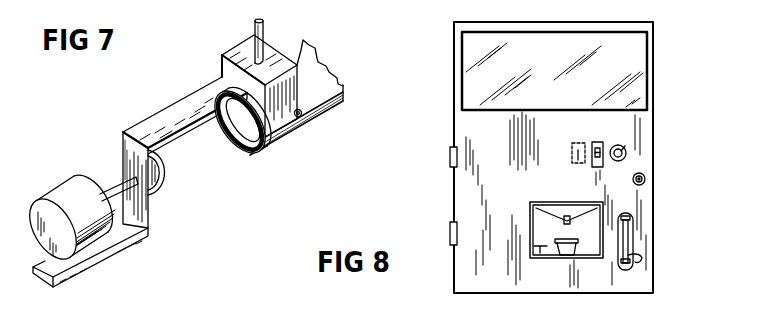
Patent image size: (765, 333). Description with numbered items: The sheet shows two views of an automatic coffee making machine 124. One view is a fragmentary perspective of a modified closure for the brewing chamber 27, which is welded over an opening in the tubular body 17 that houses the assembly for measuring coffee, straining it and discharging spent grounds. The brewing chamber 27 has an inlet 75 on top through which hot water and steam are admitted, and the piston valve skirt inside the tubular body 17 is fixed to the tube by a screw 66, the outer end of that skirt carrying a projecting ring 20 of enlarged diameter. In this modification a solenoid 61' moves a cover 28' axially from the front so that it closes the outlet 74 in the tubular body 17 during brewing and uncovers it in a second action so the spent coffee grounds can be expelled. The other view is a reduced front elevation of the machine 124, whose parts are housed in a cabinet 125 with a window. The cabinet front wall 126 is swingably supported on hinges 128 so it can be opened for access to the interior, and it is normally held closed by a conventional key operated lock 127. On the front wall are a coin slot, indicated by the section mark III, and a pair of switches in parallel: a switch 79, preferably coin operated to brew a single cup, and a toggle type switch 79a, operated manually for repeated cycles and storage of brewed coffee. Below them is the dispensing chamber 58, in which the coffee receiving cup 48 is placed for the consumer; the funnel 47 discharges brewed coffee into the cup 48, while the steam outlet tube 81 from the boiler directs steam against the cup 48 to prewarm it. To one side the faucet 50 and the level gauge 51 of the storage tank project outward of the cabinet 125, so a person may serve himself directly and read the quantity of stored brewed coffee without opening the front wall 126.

In FIG. 7, the solenoid 61' is at (67, 213).
In FIG. 7, the cover 28' is at (171, 172).
In FIG. 7, the brewing chamber 27 is at (282, 95).
In FIG. 7, the inlet 75 is at (253, 27).
In FIG. 7, the tubular body 17 is at (325, 88).
In FIG. 7, the screw 66 is at (300, 117).
In FIG. 7, the projecting ring 20 is at (243, 152).
In FIG. 7, the outlet 74 is at (238, 128).
In FIG. 8, the automatic coffee machine 124 is at (658, 204).
In FIG. 8, the cabinet front wall 126 is at (463, 270).
In FIG. 8, the cabinet 125 is at (558, 105).
In FIG. 8, the hinges 128 is at (455, 163).
In FIG. 8, the section line III is at (571, 147).
In FIG. 8, the switch 79 is at (595, 167).
In FIG. 8, the toggle type switch 79a is at (620, 146).
In FIG. 8, the key operated lock 127 is at (646, 180).
In FIG. 8, the dispensing chamber 58 is at (539, 222).
In FIG. 8, the funnel 47 is at (556, 210).
In FIG. 8, the steam outlet tube 81 is at (543, 254).
In FIG. 8, the coffee receiving cup 48 is at (573, 256).
In FIG. 8, the faucet 50 is at (627, 268).
In FIG. 8, the level gauge 51 is at (627, 238).